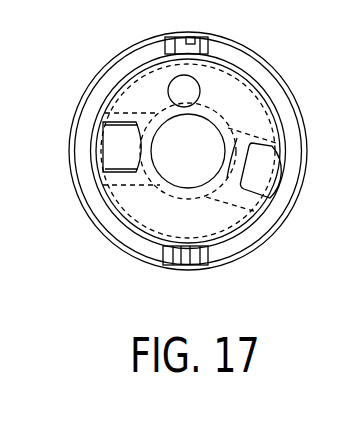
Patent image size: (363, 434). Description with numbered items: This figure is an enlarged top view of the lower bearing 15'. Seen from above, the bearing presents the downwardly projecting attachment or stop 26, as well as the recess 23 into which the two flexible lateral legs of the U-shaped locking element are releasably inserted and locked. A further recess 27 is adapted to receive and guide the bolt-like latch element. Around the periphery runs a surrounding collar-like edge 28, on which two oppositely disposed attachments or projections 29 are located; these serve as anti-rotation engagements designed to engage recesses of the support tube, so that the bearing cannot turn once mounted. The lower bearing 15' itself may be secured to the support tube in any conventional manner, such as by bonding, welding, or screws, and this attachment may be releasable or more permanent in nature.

The lower bearing 15' is at (209, 151).
The recess 23 is at (84, 131).
The collar-like edge 28 is at (303, 67).
The attachment or stop 26 is at (308, 205).
The recess 27 is at (226, 30).
The attachments or projections 29 is at (197, 12).